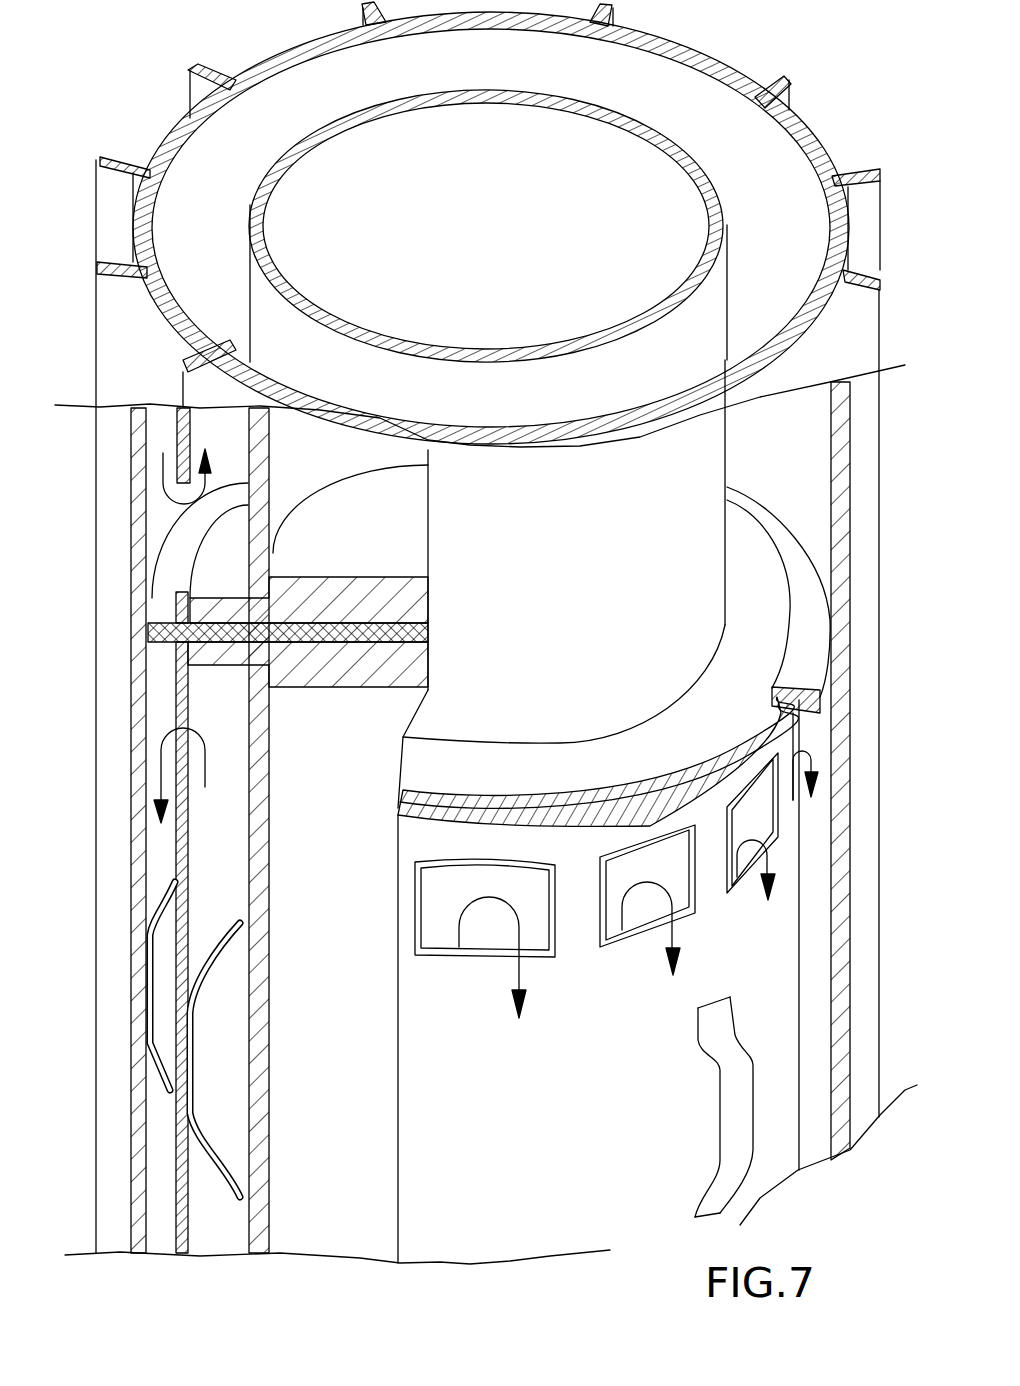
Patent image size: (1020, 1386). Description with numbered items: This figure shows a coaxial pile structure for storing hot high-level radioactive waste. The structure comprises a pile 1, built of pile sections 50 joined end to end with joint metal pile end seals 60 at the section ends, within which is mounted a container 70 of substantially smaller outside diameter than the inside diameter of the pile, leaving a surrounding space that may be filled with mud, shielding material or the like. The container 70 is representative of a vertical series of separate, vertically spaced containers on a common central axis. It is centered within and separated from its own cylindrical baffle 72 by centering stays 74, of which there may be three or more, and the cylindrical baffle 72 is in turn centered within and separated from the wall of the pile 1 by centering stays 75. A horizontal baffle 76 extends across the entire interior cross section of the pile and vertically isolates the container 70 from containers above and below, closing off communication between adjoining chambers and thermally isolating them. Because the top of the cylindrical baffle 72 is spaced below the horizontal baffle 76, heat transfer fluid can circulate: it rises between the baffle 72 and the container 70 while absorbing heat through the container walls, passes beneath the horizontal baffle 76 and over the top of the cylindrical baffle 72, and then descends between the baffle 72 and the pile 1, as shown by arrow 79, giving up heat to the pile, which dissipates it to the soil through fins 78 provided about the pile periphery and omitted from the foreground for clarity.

The pile 1 is at (160, 180).
The fins 78 is at (882, 192).
The container 70 is at (539, 671).
The pile sections 50 is at (727, 225).
The joint metal pile end seals 60 is at (430, 607).
The horizontal baffles 76 is at (148, 630).
The cylindrical baffle 72 is at (177, 432).
The arrow 79 is at (486, 733).
The centering stays 75 is at (150, 912).
The centering stays 74 is at (192, 1100).